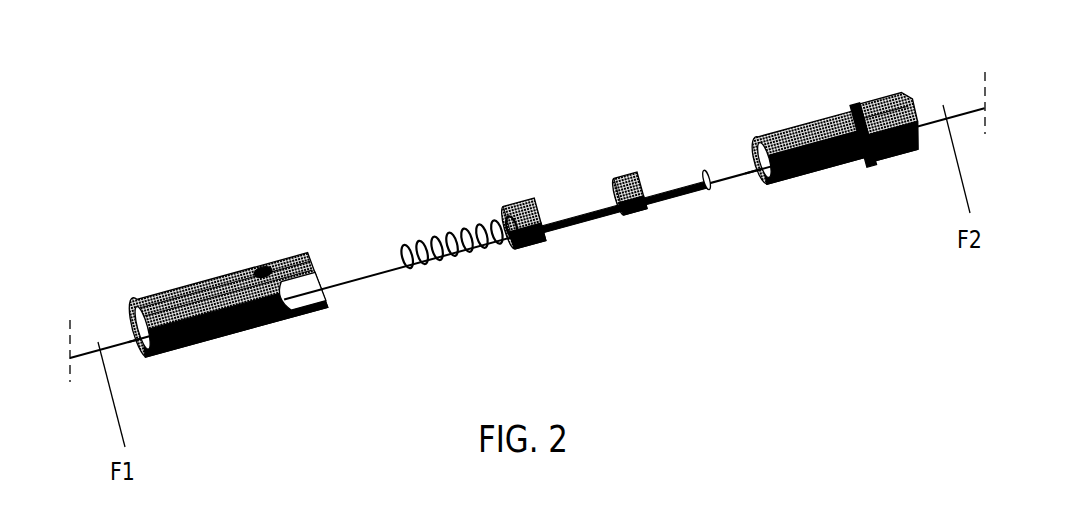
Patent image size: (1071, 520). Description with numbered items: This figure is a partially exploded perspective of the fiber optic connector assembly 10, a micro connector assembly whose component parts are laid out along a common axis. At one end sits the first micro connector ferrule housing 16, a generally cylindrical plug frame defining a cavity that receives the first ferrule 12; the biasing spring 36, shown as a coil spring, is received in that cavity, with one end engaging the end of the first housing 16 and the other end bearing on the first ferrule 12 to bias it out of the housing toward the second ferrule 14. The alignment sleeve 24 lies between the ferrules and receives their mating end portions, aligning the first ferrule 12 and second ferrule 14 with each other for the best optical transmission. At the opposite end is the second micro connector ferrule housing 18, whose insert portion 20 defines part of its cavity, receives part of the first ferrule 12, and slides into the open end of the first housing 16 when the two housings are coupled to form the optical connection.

The fiber optic connector assembly 10 is at (400, 75).
The first ferrule 12 is at (508, 200).
The second ferrule 14 is at (610, 175).
The first micro connector ferrule housing 16 is at (217, 250).
The second micro connector ferrule housing 18 is at (808, 182).
The insert portion 20 is at (787, 157).
The alignment sleeve 24 is at (580, 232).
The biasing spring 36 is at (425, 222).